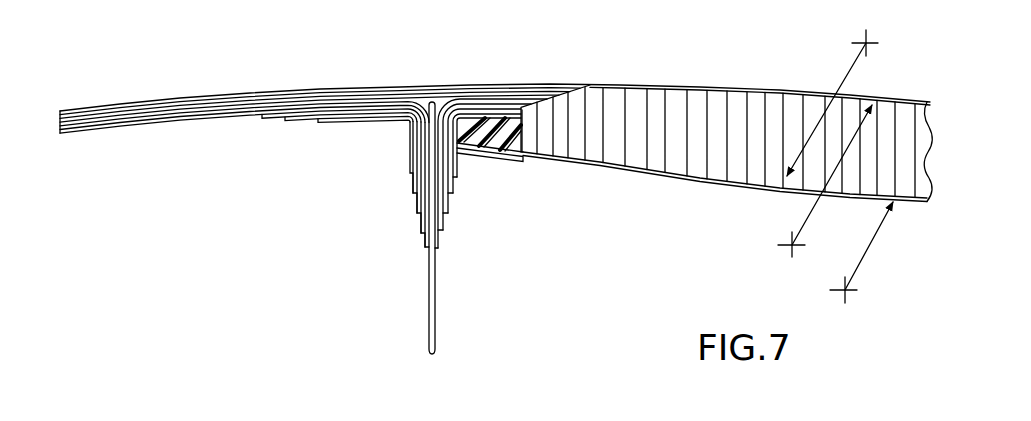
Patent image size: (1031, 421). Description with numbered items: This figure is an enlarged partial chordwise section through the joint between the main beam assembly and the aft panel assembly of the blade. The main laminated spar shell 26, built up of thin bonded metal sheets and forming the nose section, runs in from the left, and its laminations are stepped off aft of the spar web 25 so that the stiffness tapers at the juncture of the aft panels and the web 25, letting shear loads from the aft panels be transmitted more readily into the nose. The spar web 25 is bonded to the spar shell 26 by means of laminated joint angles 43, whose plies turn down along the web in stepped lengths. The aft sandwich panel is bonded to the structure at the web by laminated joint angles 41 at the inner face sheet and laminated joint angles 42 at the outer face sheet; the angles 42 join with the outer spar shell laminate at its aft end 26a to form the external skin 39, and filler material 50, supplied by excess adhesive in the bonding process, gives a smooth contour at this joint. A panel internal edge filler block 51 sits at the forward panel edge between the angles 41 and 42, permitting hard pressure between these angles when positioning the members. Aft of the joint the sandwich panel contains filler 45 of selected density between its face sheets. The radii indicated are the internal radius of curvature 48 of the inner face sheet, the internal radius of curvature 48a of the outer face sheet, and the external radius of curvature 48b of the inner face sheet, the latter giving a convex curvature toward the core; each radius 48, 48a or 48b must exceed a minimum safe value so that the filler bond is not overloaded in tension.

The main laminated spar shell 26 is at (475, 82).
The aft end of outer spar shell laminate 26a is at (588, 83).
The laminated joint angles at the outer face sheets 42 is at (516, 108).
The laminated joint angles 43 is at (425, 247).
The spar web 25 is at (428, 290).
The panel internal edge filler block 51 is at (512, 130).
The laminated joint angles at the inner face sheets 41 is at (510, 150).
The filler material 50 is at (622, 85).
The external metal skin 39 is at (910, 100).
The filler 45 is at (932, 157).
The internal radius of curvature of inner face sheet 48 is at (849, 72).
The internal radius of curvature of outer face sheet 48a is at (802, 227).
The external radius of curvature of inner face sheet 48b is at (860, 265).